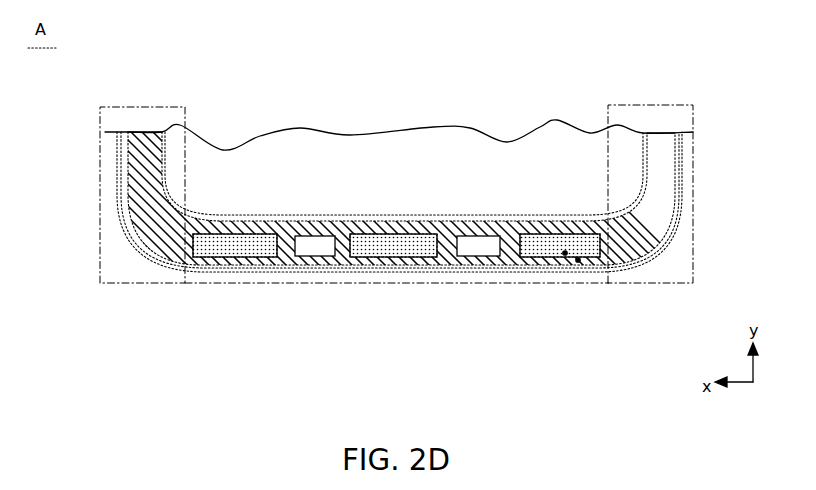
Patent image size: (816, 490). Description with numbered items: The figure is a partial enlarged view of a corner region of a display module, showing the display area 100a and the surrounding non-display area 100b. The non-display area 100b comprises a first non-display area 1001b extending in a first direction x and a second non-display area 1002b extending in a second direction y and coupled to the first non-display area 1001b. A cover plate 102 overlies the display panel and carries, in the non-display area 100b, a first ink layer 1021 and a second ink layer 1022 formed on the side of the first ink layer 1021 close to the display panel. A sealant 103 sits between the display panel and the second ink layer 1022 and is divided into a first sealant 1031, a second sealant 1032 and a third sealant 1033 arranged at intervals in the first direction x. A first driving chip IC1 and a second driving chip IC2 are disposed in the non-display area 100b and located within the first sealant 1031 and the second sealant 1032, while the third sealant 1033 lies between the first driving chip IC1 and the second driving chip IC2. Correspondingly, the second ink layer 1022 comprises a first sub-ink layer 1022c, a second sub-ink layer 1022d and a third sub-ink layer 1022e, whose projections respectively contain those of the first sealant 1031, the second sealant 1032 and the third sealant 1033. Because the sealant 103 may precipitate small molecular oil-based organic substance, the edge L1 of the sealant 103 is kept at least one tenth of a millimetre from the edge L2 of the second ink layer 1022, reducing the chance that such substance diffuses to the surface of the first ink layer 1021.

The display area 100a is at (492, 160).
The non-display area 100b is at (390, 260).
The first non-display area 1001b is at (197, 278).
The second non-display area 1002b is at (195, 357).
The cover plate 102 is at (387, 250).
The first ink layer 1021 is at (462, 270).
The second ink layer 1022 is at (396, 278).
The first sub-ink layer 1022c is at (197, 236).
The second sub-ink layer 1022d is at (597, 233).
The third sub-ink layer 1022e is at (395, 261).
The sealant 103 is at (346, 238).
The first sealant 1031 is at (238, 256).
The second sealant 1032 is at (558, 249).
The third sealant 1033 is at (397, 293).
The first driving chip IC1 is at (315, 246).
The second driving chip IC2 is at (478, 246).
The edge of the sealant L1 is at (565, 253).
The edge of the second ink layer L2 is at (578, 260).